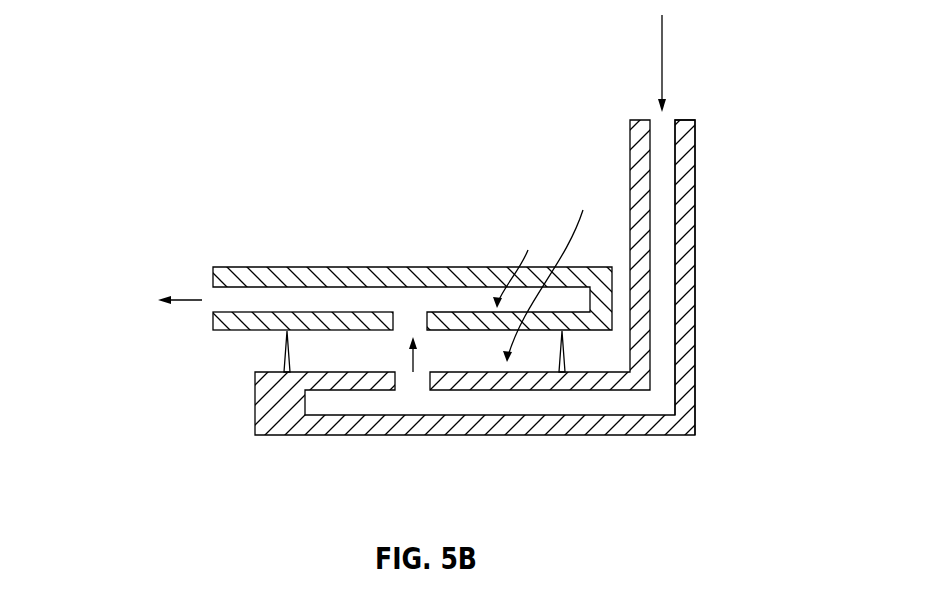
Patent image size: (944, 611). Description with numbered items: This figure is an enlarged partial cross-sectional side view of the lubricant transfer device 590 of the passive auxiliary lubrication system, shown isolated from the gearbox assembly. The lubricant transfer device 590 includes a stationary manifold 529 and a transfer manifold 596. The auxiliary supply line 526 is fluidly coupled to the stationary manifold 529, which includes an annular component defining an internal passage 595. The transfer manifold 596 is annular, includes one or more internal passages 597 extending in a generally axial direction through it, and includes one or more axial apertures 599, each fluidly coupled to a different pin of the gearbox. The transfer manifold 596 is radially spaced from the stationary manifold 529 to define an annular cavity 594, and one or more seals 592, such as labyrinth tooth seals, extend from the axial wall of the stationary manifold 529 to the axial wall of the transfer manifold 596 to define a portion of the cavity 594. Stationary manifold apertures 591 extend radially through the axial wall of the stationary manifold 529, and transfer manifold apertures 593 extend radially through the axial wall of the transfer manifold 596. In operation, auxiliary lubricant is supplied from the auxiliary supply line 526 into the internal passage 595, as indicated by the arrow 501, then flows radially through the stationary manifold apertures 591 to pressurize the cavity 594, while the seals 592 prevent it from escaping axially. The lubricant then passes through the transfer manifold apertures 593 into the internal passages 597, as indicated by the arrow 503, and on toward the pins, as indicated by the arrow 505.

The lubricant transfer device 590 is at (158, 106).
The arrow 501 is at (664, 60).
The arrow 505 is at (187, 300).
The auxiliary supply line 526 is at (697, 252).
The stationary manifold 529 is at (613, 437).
The arrow 503 is at (413, 355).
The stationary manifold apertures 591 is at (428, 373).
The seals 592 is at (283, 349).
The transfer manifold apertures 593 is at (397, 318).
The cavity 594 is at (554, 270).
The internal passage 595 is at (481, 398).
The transfer manifold 596 is at (308, 278).
The internal passages 597 is at (521, 258).
The axial apertures 599 is at (213, 313).